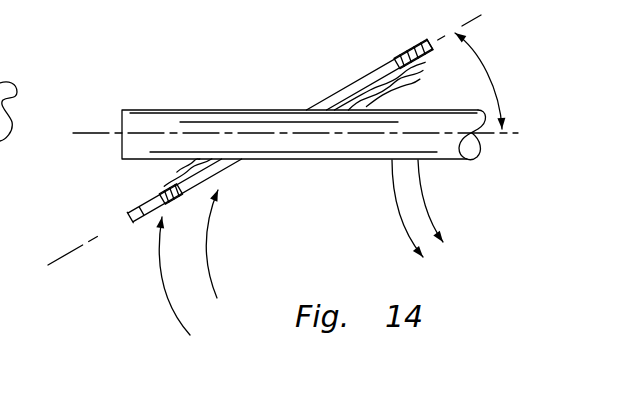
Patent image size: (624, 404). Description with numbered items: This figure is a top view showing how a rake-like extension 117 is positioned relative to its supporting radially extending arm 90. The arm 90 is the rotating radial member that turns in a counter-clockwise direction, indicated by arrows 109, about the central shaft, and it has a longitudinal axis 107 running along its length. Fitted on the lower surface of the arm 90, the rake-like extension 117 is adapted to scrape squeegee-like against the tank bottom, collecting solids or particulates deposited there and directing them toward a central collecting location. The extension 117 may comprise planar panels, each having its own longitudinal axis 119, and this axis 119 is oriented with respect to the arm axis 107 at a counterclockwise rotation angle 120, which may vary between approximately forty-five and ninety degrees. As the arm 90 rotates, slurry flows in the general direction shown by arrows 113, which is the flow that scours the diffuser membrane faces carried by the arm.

The radially extending arm 90 is at (203, 109).
The longitudinal axis of arm 107 is at (105, 132).
The arrows indicating rotation direction 109 is at (407, 217).
The arrows indicating slurry flow direction 113 is at (163, 277).
The rake-like extension 117 is at (152, 200).
The longitudinal axis of rake-like extension panel 119 is at (82, 246).
The counterclockwise rotation angle 120 is at (477, 63).